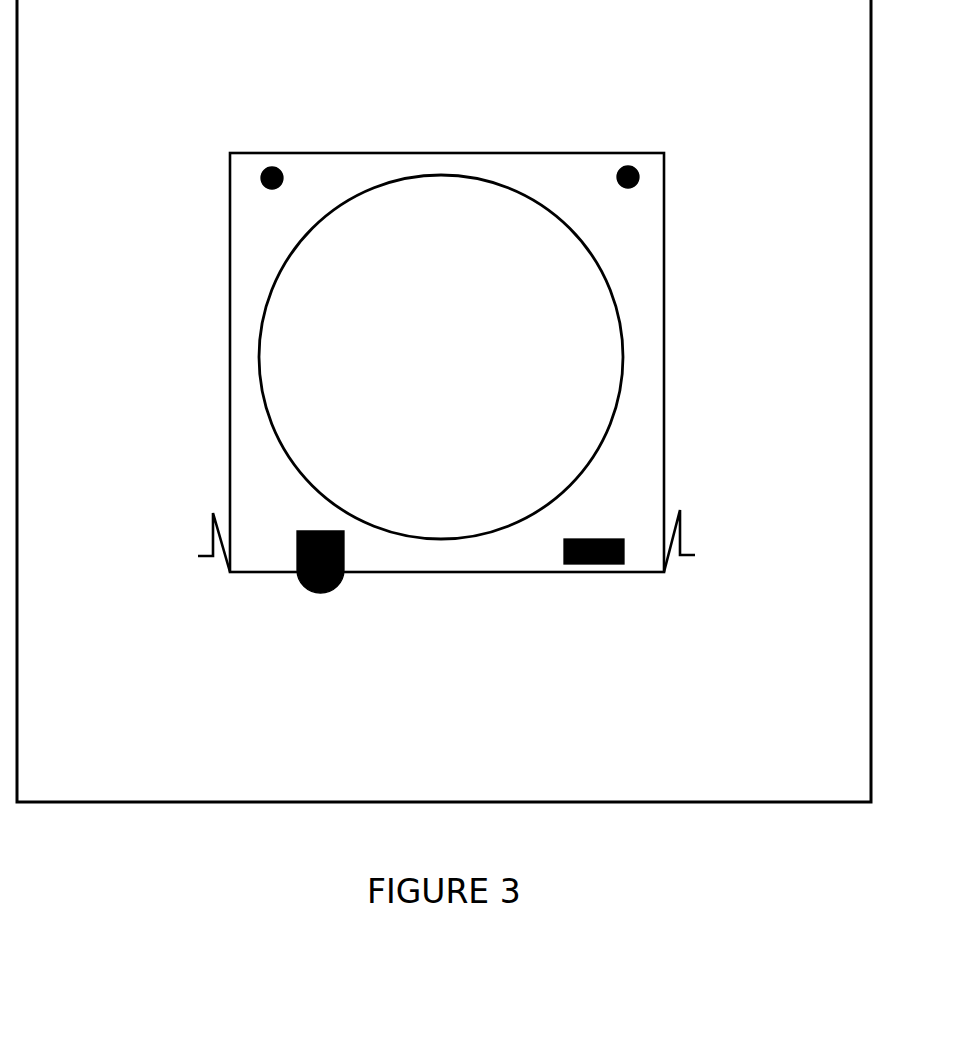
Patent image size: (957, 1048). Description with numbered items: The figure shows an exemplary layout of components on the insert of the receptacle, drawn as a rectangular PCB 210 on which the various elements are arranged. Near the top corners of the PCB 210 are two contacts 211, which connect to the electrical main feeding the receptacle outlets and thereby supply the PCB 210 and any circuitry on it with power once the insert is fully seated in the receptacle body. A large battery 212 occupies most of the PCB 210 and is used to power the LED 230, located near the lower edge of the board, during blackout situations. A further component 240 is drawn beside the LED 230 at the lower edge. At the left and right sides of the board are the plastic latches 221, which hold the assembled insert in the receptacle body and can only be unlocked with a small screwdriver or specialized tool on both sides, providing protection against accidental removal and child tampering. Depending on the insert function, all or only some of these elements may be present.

The PCB 210 is at (242, 378).
The contacts 211 is at (601, 158).
The battery 212 is at (487, 356).
The plastic latches 221 is at (227, 585).
The LED 230 is at (276, 526).
The rectangular component 240 is at (607, 526).